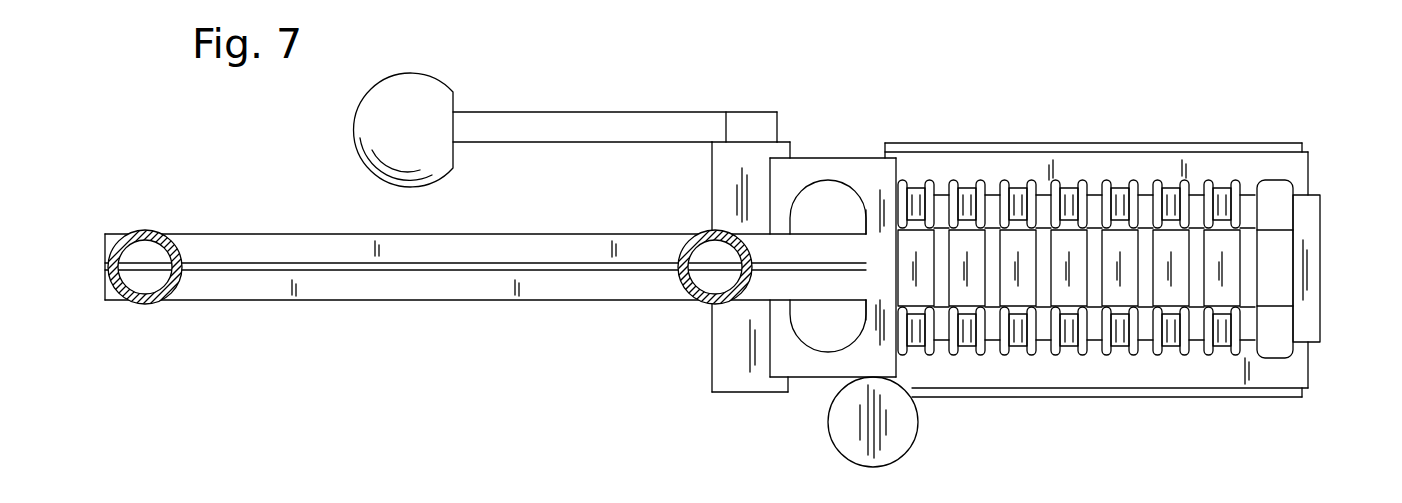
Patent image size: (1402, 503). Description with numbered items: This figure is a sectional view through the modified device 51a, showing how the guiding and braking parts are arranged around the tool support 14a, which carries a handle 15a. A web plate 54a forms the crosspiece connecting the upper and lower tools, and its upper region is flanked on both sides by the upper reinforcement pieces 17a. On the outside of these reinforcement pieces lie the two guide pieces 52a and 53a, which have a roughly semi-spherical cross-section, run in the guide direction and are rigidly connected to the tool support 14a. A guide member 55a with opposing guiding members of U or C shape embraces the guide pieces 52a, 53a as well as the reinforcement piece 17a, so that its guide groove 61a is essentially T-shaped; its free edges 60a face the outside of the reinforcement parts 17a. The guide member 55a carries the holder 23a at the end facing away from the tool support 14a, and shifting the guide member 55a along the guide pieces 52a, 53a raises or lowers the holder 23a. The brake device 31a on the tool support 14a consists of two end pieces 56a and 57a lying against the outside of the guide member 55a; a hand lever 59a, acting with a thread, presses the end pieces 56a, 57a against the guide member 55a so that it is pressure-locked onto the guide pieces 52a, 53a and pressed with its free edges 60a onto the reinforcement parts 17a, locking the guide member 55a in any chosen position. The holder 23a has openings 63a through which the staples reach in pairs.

The tool support 14a is at (468, 302).
The handle 15a is at (143, 307).
The upper reinforcement pieces 17a is at (298, 243).
The holder 23a is at (1313, 163).
The brake device 31a is at (720, 393).
The device 51a is at (175, 205).
The guide piece 52a is at (822, 203).
The guide piece 53a is at (835, 337).
The web plate 54a is at (570, 268).
The guide member 55a is at (882, 185).
The end piece 56a is at (777, 387).
The end piece 57a is at (778, 150).
The hand lever 59a is at (537, 127).
The free edges 60a is at (777, 213).
The guide groove 61a is at (855, 185).
The openings 63a is at (1280, 330).